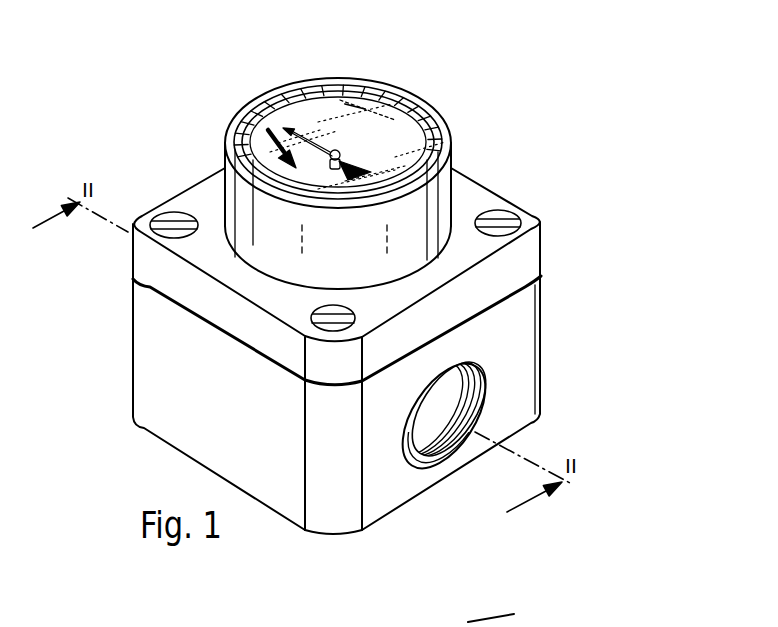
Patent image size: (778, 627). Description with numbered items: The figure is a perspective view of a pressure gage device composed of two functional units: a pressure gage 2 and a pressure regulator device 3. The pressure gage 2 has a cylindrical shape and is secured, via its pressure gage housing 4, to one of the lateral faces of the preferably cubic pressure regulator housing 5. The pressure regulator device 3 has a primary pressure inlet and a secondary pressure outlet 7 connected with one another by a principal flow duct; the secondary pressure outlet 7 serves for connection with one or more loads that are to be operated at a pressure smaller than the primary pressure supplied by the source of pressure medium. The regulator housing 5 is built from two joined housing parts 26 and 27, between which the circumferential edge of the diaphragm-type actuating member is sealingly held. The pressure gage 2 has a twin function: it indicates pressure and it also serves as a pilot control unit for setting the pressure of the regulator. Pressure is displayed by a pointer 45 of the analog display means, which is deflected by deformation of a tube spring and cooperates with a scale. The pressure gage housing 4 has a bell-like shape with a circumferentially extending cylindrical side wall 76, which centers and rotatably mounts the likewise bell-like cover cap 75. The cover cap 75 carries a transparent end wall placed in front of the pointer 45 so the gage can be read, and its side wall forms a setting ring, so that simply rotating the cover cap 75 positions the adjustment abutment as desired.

The pressure gage 2 is at (471, 130).
The pressure regulator device 3 is at (565, 308).
The pressure gage housing 4 is at (240, 118).
The pressure regulator housing 5 is at (192, 398).
The secondary pressure outlet 7 is at (437, 445).
The housing part 26 is at (528, 258).
The housing part 27 is at (515, 372).
The pointer 45 is at (287, 128).
The cover cap 75 is at (433, 204).
The cylindrical side wall 76 is at (356, 107).